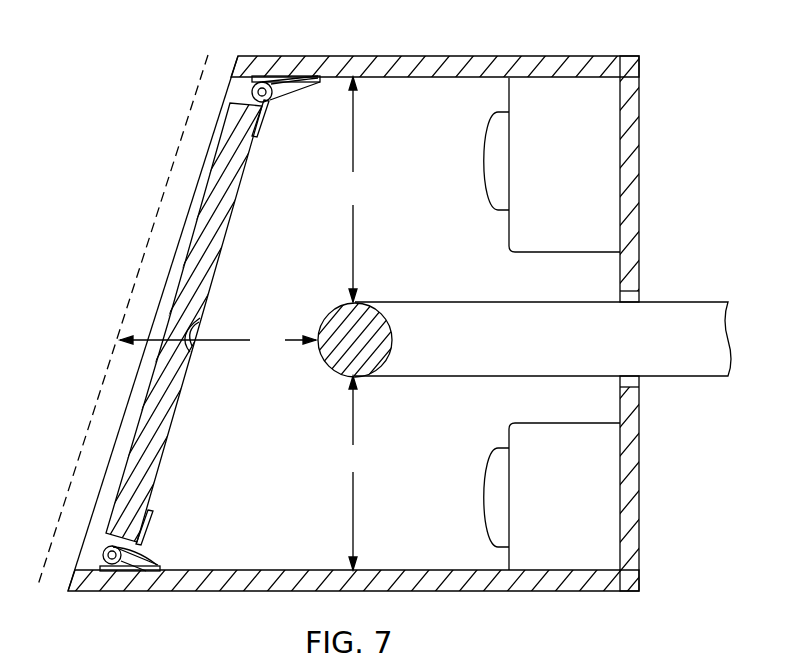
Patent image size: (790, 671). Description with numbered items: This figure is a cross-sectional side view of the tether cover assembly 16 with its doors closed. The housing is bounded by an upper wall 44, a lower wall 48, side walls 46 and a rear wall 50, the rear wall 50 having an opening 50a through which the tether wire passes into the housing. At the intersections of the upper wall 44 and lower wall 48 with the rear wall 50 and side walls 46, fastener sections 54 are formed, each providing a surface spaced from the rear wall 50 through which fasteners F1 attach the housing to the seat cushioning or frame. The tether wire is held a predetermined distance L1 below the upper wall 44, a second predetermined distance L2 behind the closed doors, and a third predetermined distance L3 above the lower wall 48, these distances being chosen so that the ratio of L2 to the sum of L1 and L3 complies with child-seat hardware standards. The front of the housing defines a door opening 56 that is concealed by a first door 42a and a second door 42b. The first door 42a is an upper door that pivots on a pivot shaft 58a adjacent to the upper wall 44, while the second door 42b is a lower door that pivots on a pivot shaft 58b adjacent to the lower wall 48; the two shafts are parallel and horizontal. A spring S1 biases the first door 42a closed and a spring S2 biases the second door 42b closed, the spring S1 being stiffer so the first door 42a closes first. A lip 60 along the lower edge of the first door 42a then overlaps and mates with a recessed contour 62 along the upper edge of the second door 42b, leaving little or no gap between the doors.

The tether cover assembly 16 is at (104, 117).
The upper wall 44 is at (450, 56).
The side walls 46 is at (391, 110).
The lower wall 48 is at (295, 568).
The rear wall 50 is at (640, 128).
The opening 50a is at (638, 382).
The fastener sections 54 is at (558, 253).
The door opening 56 is at (190, 240).
The pivot shaft 58a is at (266, 84).
The pivot shaft 58b is at (112, 565).
The lip 60 is at (186, 340).
The recessed contour 62 is at (190, 323).
The first door 42a is at (222, 206).
The second door 42b is at (176, 423).
The spring S1 is at (283, 94).
The spring S2 is at (125, 553).
The fasteners F1 is at (452, 513).
The predetermined distance L1 is at (354, 189).
The second predetermined distance L2 is at (218, 347).
The third predetermined distance L3 is at (354, 473).